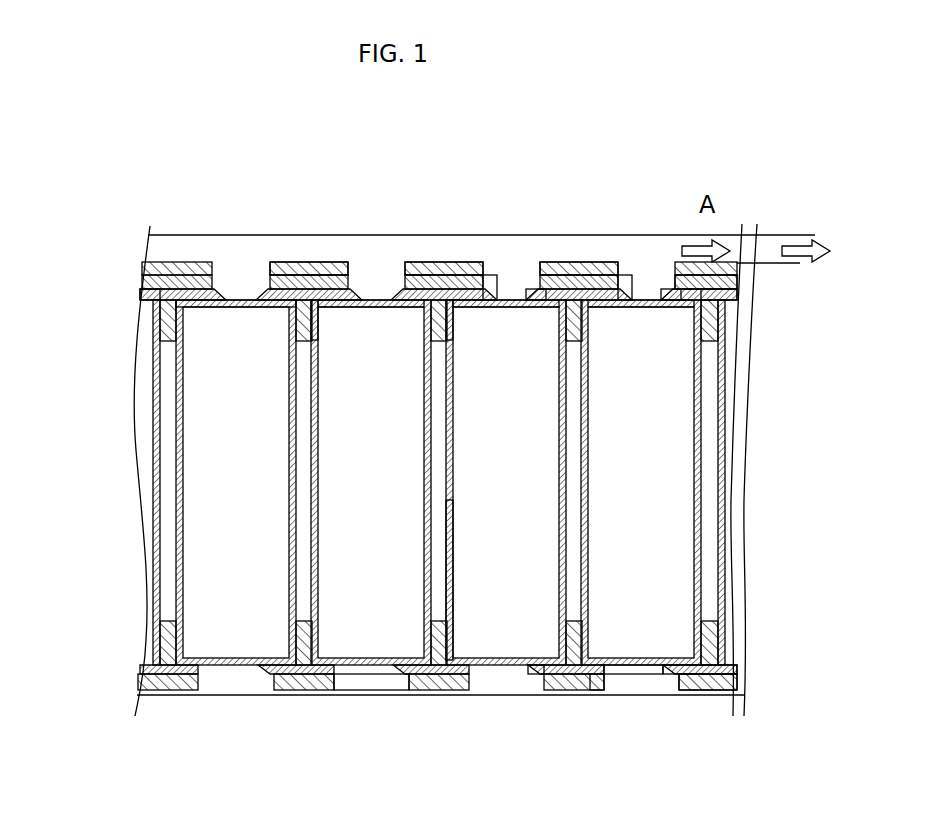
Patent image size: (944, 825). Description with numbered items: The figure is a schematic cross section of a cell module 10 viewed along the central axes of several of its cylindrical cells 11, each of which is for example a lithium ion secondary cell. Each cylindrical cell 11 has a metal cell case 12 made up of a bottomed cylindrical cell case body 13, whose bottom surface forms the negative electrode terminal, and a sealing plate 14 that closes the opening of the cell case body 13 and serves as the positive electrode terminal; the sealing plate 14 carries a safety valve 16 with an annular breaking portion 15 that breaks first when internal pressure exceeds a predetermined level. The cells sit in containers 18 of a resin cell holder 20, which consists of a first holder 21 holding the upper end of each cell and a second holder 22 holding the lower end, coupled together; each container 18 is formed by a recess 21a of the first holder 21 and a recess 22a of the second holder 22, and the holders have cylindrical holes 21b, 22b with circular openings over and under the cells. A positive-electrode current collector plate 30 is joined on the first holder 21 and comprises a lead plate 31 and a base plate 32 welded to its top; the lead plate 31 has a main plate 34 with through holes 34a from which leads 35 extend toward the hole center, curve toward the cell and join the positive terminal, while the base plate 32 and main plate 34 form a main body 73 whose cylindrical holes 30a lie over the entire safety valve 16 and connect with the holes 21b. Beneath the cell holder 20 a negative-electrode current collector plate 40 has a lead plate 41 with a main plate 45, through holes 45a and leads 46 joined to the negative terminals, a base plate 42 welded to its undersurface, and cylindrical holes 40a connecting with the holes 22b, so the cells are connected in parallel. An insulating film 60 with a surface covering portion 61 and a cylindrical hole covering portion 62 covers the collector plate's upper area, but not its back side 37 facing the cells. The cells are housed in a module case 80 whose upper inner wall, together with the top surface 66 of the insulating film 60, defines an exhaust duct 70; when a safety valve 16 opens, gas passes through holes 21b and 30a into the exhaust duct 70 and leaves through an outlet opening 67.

The cell module 10 is at (470, 150).
The cylindrical cell 11 is at (256, 499).
The cell case 12 is at (357, 678).
The cell case body 13 is at (462, 560).
The sealing plate 14 is at (330, 299).
The breaking portion 15 is at (360, 310).
The safety valve 16 is at (493, 307).
The container 18 is at (205, 321).
The cell holder 20 is at (90, 452).
The first holder 21 is at (158, 301).
The recess 21a is at (190, 291).
The cylindrical hole 21b is at (385, 296).
The second holder 22 is at (155, 661).
The recess 22a is at (192, 691).
The cylindrical hole 22b is at (204, 670).
The positive-electrode current collector plate 30 is at (70, 262).
The cylindrical hole 30a is at (532, 297).
The lead plate 31 is at (145, 288).
The base plate 32 is at (143, 268).
The main plate 34 is at (728, 300).
The through hole 34a is at (650, 299).
The lead 35 is at (537, 301).
The back side 37 is at (147, 302).
The negative-electrode current collector plate 40 is at (812, 640).
The cylindrical hole 40a is at (535, 691).
The lead plate 41 is at (736, 668).
The base plate 42 is at (736, 686).
The main plate 45 is at (700, 691).
The through hole 45a is at (605, 681).
The lead 46 is at (640, 677).
The insulating film 60 is at (436, 263).
The surface covering portion 61 is at (576, 265).
The cylindrical hole covering portion 62 is at (490, 297).
The top surface 66 is at (302, 265).
The outlet opening 67 is at (800, 233).
The exhaust duct 70 is at (622, 289).
The main body 73 is at (742, 283).
The module case 80 is at (190, 231).